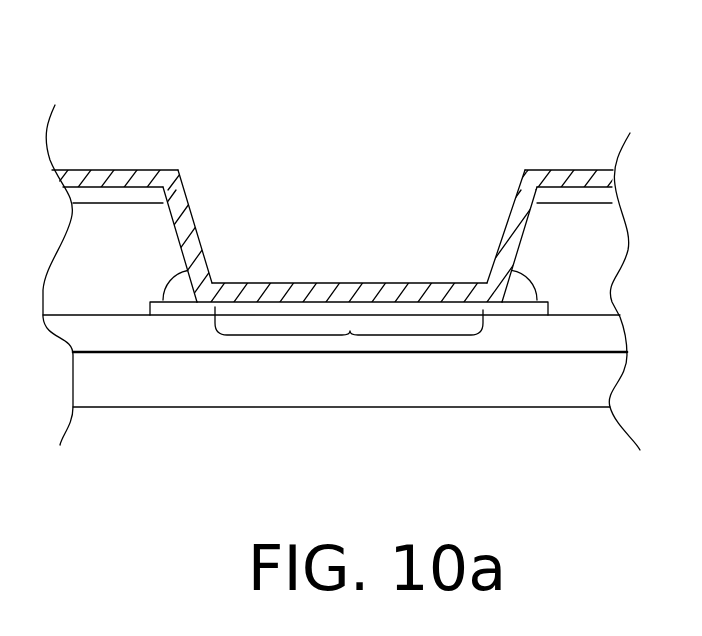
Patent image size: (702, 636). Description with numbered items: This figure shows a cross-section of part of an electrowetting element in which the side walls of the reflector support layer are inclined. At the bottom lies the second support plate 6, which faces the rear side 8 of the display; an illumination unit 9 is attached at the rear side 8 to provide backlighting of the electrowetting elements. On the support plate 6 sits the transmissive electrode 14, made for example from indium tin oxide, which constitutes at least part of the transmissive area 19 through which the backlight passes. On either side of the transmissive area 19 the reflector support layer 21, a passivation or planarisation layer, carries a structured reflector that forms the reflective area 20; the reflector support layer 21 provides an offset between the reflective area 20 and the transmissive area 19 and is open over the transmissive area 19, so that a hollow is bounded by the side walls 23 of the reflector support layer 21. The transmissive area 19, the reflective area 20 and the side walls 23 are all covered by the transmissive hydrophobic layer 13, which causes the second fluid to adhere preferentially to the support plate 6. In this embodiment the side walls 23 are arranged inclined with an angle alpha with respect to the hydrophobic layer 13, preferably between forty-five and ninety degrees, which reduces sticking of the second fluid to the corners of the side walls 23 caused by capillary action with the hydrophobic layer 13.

The second support plate 6 is at (547, 337).
The rear side 8 is at (432, 355).
The illumination unit 9 is at (492, 378).
The hydrophobic layer 13 is at (258, 298).
The electrode 14 is at (320, 298).
The transmissive area 19 is at (350, 334).
The reflective area 20 is at (134, 185).
The reflector support layer 21 is at (145, 250).
The side walls 23 is at (197, 222).